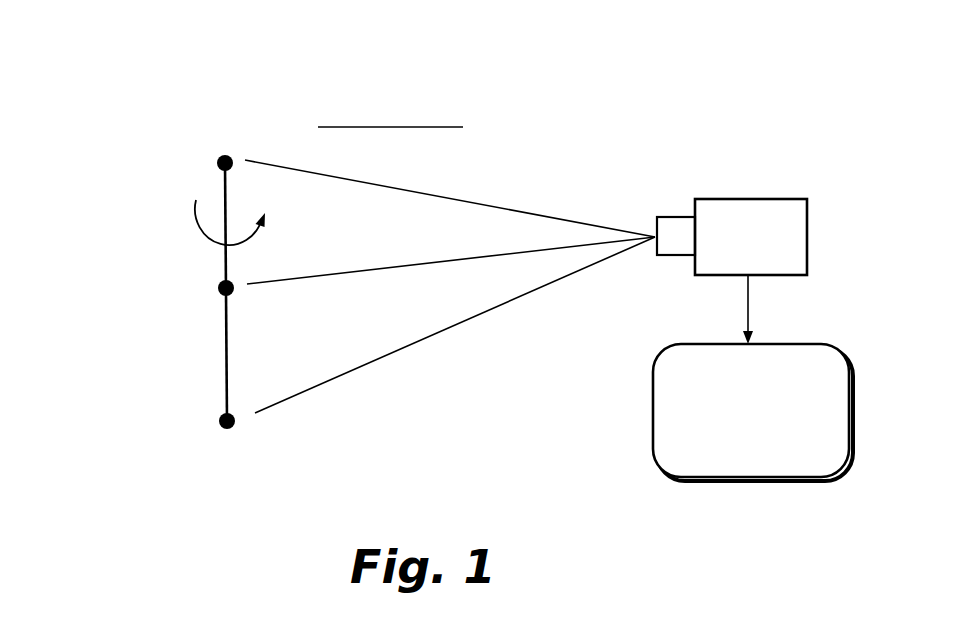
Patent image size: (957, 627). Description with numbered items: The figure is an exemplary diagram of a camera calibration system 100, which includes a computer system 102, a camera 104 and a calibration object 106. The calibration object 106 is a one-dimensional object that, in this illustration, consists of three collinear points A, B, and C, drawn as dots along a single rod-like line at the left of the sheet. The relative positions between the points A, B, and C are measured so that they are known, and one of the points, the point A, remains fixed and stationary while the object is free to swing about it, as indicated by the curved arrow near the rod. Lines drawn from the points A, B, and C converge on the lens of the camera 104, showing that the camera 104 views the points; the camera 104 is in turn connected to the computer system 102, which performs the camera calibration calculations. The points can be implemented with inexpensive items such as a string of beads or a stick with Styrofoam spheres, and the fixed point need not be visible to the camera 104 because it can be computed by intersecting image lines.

The camera calibration system 100 is at (533, 38).
The computer system 102 is at (652, 410).
The camera 104 is at (737, 199).
The calibration object 106 is at (253, 266).
The collinear point A is at (230, 153).
The collinear point B is at (238, 413).
The collinear point C is at (233, 283).